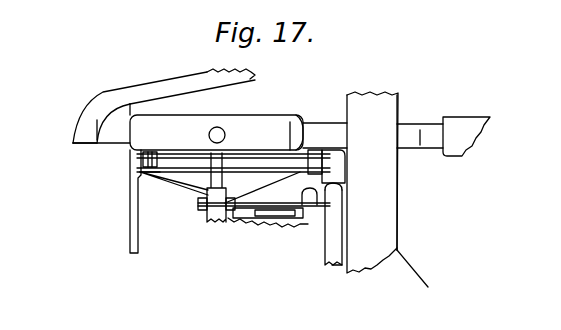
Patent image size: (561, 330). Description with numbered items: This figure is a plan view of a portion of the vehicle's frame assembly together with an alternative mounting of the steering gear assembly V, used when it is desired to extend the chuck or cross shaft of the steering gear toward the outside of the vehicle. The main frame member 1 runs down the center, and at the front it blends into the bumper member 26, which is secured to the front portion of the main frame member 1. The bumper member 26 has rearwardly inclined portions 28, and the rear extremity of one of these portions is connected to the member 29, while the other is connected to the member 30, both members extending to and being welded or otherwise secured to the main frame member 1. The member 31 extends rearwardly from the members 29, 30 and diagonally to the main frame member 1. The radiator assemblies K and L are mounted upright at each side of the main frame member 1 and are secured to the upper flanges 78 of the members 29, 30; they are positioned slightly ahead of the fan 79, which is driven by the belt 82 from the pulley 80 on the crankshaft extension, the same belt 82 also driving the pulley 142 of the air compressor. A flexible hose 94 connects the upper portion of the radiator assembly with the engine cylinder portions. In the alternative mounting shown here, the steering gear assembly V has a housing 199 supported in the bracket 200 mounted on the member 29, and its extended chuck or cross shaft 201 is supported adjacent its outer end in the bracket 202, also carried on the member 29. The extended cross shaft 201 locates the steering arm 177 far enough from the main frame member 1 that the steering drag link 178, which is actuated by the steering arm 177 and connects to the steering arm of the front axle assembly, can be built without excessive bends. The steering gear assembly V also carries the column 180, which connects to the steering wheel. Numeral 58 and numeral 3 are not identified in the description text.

The bumper member 26 is at (73, 143).
The rearwardly inclined portions 28 is at (115, 91).
The blade 58 is at (171, 101).
The radiator assembly K is at (250, 116).
The bracket 200 is at (303, 118).
The extended chuck or cross shaft 201 is at (267, 153).
The member 29 is at (313, 122).
The member 30 is at (418, 123).
The radiator assembly L is at (468, 117).
The upper flanges 78 is at (110, 135).
The member 31 is at (192, 157).
The plate 3 is at (385, 212).
The main frame member 1 is at (417, 273).
The housing 199 is at (345, 195).
The steering arm 177 is at (150, 170).
The bracket 202 is at (145, 175).
The steering drag link 178 is at (130, 238).
The fan 79 is at (183, 193).
The flexible hose 94 is at (208, 218).
The belt 82 is at (243, 223).
The pulley 80 is at (290, 217).
The pulley 142 is at (315, 212).
The column 180 is at (325, 258).
The steering gear assembly V is at (332, 262).